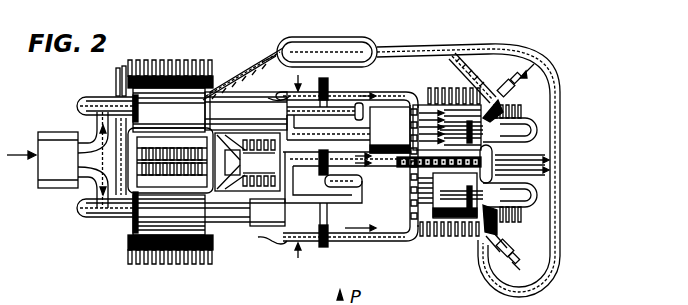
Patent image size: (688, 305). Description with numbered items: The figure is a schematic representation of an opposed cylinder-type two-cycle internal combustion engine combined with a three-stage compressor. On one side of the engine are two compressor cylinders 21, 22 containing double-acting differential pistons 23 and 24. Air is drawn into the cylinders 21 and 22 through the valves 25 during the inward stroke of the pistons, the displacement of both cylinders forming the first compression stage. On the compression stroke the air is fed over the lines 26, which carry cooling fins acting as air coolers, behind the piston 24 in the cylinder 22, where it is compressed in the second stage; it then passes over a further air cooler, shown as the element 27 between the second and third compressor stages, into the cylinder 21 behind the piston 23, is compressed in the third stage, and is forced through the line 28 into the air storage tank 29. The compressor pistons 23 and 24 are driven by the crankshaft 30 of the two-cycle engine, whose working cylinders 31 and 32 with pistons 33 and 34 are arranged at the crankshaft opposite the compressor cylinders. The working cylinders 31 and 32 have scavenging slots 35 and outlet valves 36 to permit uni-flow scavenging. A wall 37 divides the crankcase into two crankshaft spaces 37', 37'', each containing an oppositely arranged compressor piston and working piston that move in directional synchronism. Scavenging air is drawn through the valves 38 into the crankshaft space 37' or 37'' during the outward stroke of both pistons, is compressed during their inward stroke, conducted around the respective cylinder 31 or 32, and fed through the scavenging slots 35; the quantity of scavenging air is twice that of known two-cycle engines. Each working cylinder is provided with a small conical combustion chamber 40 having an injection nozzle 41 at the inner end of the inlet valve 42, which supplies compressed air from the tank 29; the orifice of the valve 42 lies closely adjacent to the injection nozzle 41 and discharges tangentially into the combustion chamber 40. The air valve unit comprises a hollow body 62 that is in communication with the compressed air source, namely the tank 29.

The compressor cylinder 21 is at (148, 100).
The compressor cylinder 22 is at (133, 262).
The double-acting differential piston 23 is at (220, 97).
The double-acting differential piston 24 is at (168, 207).
The valve 25 is at (92, 98).
The line 26 is at (155, 135).
The upper piston 27 is at (233, 133).
The line 28 is at (276, 52).
The air storage tank 29 is at (368, 45).
The crankshaft 30 is at (316, 172).
The working cylinder 31 is at (425, 117).
The working cylinder 32 is at (417, 223).
The piston 33 is at (382, 127).
The piston 34 is at (427, 212).
The scavenging slot 35 is at (403, 178).
The outlet valve 36 is at (533, 128).
The wall 37 is at (346, 155).
The crankshaft space 37' is at (468, 163).
The crankshaft space 37'' is at (350, 249).
The valve 38 is at (295, 97).
The conical combustion chamber 40 is at (500, 102).
The injection nozzle 41 is at (520, 80).
The inlet valve 42 is at (493, 97).
The hollow body 62 is at (489, 83).